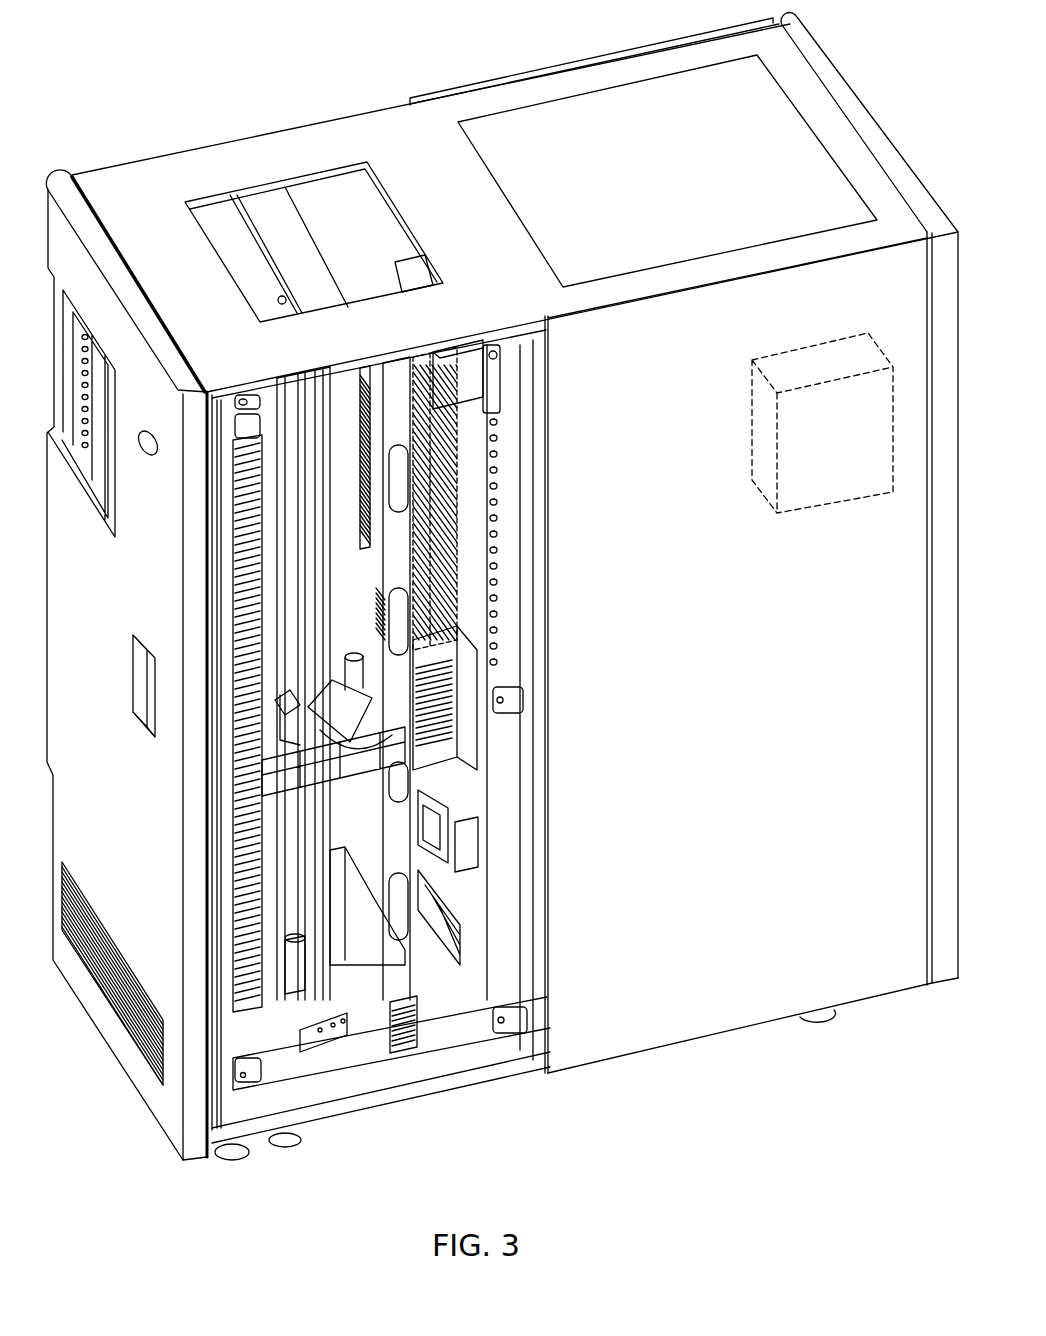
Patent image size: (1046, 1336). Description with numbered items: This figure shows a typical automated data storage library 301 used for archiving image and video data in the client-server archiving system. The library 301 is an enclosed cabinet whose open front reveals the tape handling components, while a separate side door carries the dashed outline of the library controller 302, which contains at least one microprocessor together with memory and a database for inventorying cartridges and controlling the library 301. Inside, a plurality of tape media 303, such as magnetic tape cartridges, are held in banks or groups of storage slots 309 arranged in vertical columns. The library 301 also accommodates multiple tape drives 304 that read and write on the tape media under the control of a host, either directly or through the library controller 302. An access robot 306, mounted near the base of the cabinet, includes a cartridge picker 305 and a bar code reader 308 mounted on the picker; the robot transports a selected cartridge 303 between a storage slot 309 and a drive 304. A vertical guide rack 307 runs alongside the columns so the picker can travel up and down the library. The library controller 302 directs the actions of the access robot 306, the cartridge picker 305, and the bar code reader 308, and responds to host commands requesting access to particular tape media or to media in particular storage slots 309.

The data storage library 301 is at (262, 150).
The library controller 302 is at (752, 428).
The tape media 303 is at (460, 547).
The tape drives 304 is at (463, 760).
The cartridge picker 305 is at (407, 767).
The access robot 306 is at (335, 1045).
The guide rack 307 is at (240, 530).
The bar code reader 308 is at (317, 690).
The storage slots 309 is at (410, 560).